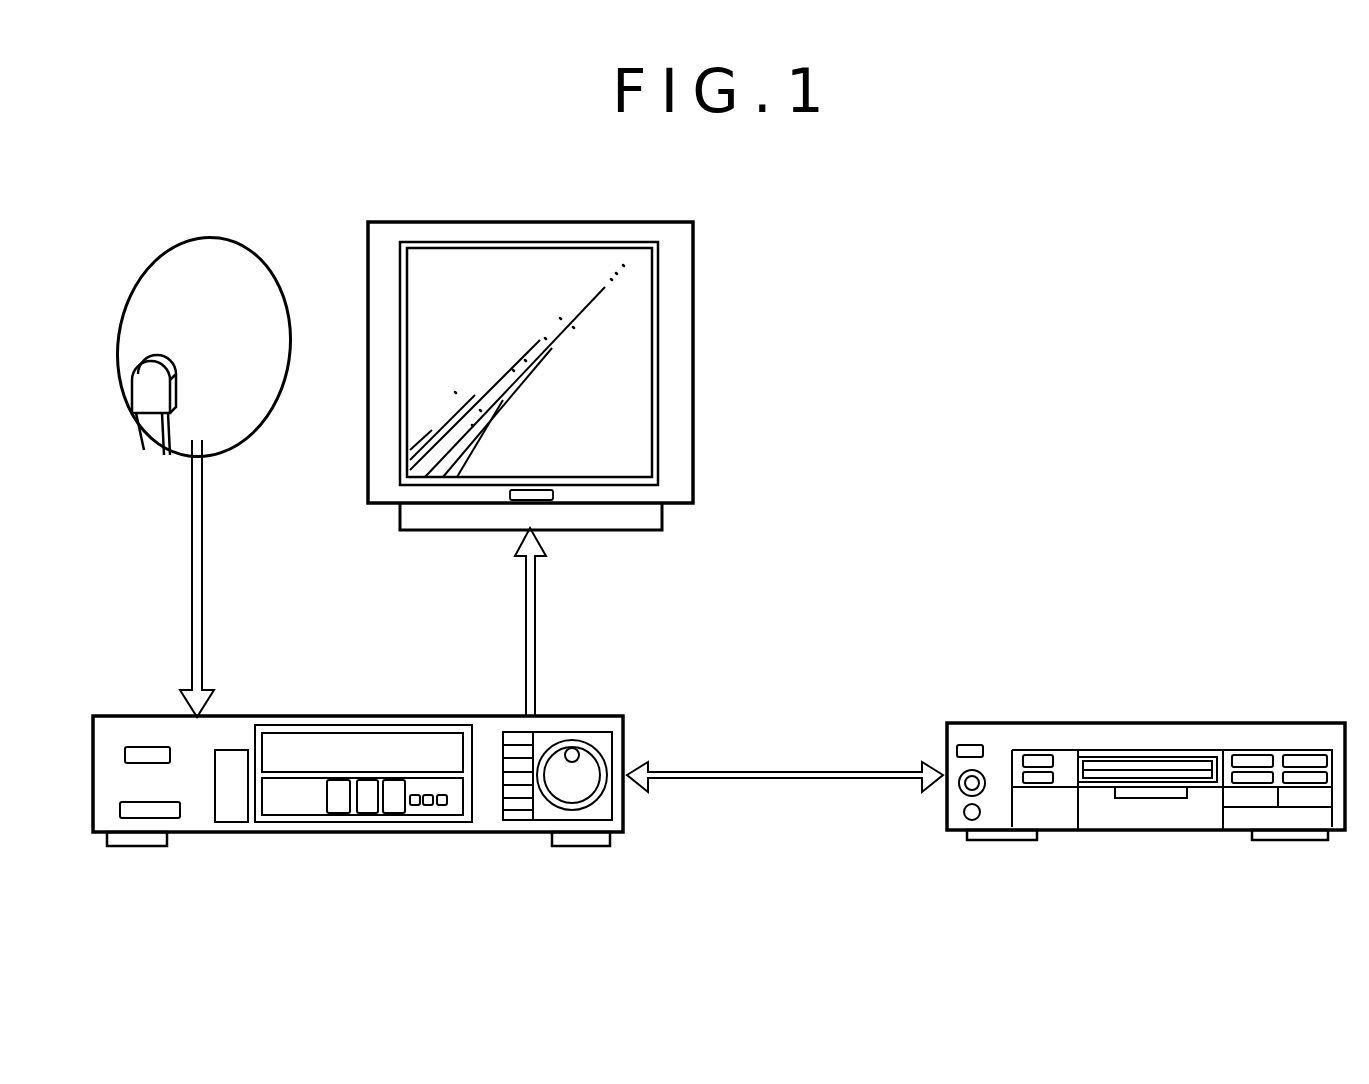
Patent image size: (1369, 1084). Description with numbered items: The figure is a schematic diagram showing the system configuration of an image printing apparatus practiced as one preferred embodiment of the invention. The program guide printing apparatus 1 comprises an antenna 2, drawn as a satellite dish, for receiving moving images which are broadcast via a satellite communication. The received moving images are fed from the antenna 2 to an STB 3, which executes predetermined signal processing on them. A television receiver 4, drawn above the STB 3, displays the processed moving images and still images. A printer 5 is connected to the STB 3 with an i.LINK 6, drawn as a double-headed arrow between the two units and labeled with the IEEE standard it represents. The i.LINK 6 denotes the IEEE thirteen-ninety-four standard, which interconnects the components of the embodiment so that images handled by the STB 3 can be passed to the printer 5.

The program guide printing apparatus 1 is at (1013, 203).
The antenna 2 is at (213, 246).
The STB 3 is at (262, 716).
The television receiver 4 is at (693, 364).
The printer 5 is at (990, 722).
The i.LINK 6 is at (745, 771).